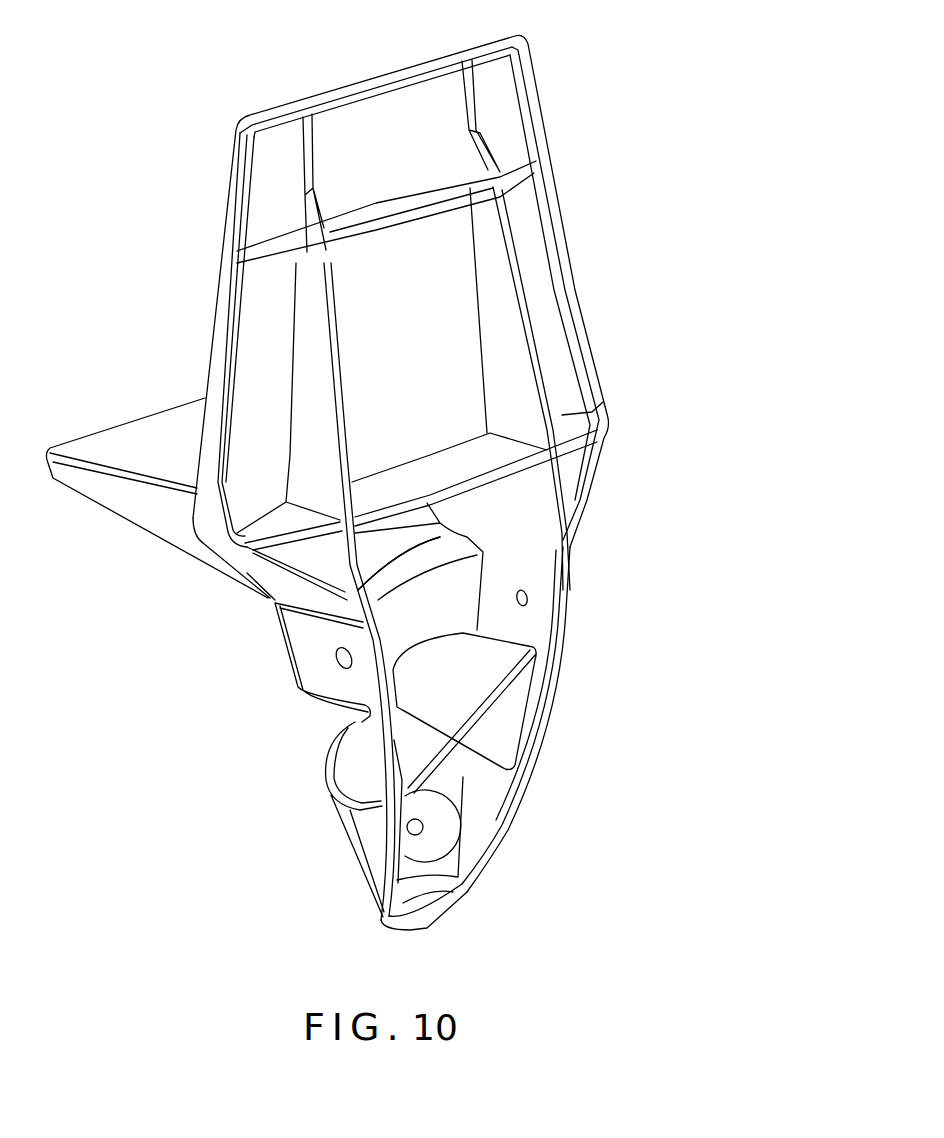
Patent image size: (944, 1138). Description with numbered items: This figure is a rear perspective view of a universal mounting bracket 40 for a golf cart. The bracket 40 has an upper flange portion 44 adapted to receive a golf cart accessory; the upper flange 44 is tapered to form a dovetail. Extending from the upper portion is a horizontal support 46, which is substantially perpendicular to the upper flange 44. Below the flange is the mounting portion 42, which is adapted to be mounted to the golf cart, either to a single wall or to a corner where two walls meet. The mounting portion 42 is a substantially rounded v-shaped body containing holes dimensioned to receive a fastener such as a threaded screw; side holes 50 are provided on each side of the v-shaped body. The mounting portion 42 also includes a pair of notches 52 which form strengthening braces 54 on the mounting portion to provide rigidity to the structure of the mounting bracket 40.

The universal mounting bracket 40 is at (656, 293).
The mounting portion 42 is at (540, 630).
The upper flange portion 44 is at (520, 132).
The horizontal support 46 is at (143, 440).
The side holes 50 is at (528, 596).
The notches 52 is at (345, 762).
The strengthening braces 54 is at (497, 700).